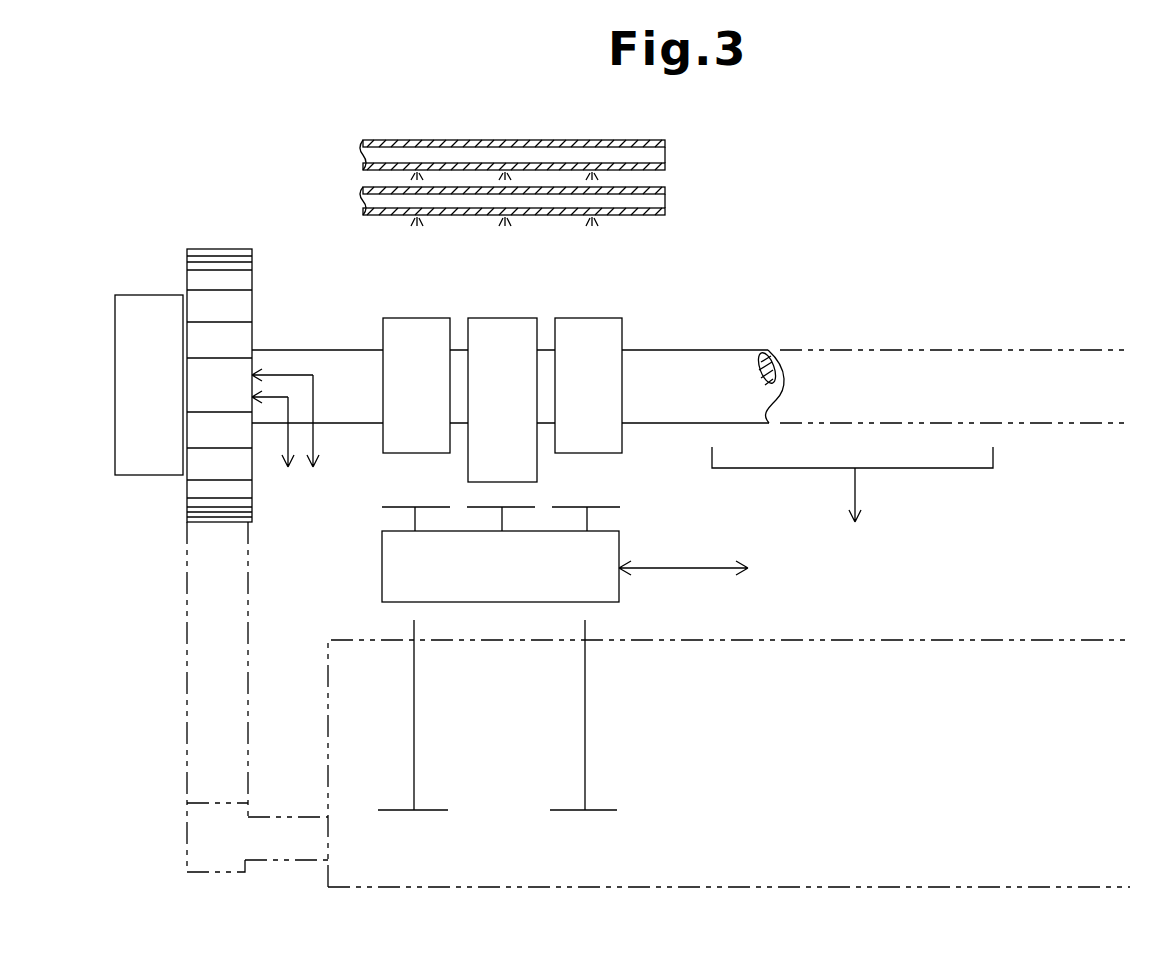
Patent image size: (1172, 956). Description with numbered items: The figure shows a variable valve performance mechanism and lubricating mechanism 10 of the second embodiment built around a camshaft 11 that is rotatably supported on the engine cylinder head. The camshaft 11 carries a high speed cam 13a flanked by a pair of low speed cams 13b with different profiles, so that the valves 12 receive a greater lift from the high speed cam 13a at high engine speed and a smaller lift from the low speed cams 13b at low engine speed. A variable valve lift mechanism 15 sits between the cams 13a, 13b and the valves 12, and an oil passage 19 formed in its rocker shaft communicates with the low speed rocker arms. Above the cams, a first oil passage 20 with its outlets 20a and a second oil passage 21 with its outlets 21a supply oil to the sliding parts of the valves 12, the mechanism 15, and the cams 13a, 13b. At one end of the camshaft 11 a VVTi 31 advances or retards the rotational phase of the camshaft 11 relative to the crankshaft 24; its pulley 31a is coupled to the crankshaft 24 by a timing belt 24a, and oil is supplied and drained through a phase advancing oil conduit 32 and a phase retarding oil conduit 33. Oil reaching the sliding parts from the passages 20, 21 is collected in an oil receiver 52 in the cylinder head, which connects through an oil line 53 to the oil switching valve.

The coating apparatus 10 is at (1047, 304).
The camshaft 11 is at (740, 350).
The valves 12 is at (585, 741).
The high speed cam 13a is at (505, 318).
The low speed cams 13b is at (422, 318).
The variable valve lift mechanism 15 is at (621, 541).
The oil passage 19 is at (685, 570).
The first oil passage 20 is at (363, 137).
The nozzle 20a is at (415, 166).
The second oil passage 21 is at (363, 185).
The nozzle 21a is at (492, 216).
The crankshaft 24 is at (289, 816).
The timing belt 24a is at (185, 768).
The VVTi 31 is at (147, 475).
The pulley 31a is at (215, 524).
The phase advancing oil conduit 32 is at (284, 437).
The phase retarding oil conduit 33 is at (318, 440).
The oil receiver 52 is at (994, 457).
The oil line 53 is at (857, 492).